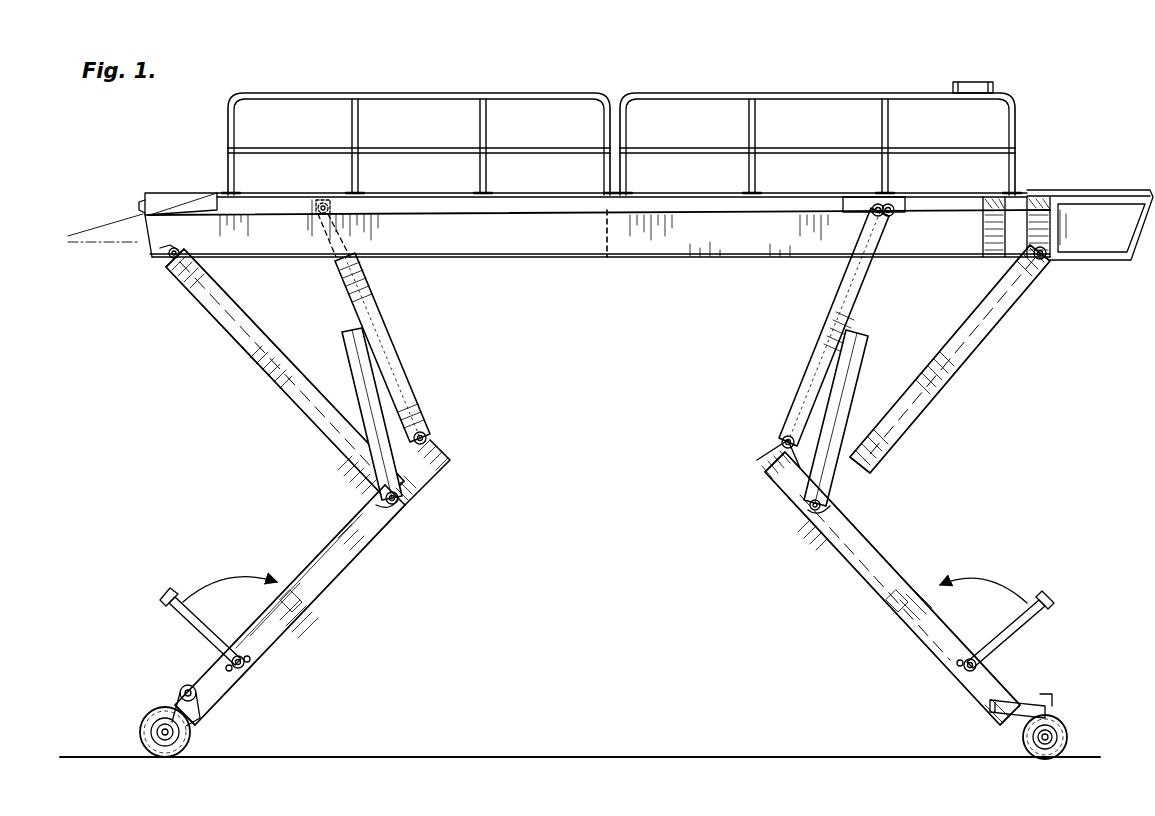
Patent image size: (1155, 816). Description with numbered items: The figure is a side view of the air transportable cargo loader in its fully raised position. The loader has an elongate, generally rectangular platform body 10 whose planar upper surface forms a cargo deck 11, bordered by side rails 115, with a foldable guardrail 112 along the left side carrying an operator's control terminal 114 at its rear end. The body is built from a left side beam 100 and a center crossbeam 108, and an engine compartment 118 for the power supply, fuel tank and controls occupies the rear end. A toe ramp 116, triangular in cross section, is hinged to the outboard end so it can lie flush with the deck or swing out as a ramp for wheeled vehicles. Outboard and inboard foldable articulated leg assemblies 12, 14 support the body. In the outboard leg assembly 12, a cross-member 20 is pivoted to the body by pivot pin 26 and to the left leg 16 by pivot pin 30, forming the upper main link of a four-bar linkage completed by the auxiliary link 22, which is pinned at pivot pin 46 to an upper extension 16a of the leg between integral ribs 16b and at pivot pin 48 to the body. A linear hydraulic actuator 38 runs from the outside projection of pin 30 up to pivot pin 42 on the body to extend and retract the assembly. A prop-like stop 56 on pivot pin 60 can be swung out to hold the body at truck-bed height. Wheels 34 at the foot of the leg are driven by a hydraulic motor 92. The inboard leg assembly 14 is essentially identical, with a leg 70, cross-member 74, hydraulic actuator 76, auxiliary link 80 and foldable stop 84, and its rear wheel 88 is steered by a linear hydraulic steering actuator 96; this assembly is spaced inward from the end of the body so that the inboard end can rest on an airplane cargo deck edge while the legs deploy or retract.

The platform body 10 is at (690, 259).
The cargo deck 11 is at (778, 188).
The outboard leg assembly 12 is at (468, 452).
The inboard leg assembly 14 is at (770, 432).
The left leg 16 is at (355, 560).
The upper extension 16a is at (440, 470).
The integral ribs 16b is at (372, 490).
The cross-member 20 is at (263, 362).
The left auxiliary link 22 is at (398, 356).
The pivot pin 26 is at (170, 256).
The pivot pin 30 is at (397, 502).
The set of wheels 34 is at (150, 720).
The linear hydraulic piston and cylinder actuator 38 is at (348, 340).
The pivot pin 42 is at (318, 203).
The pivot pin 46 is at (420, 432).
The pivot pin 48 is at (328, 200).
The stop 56 is at (173, 606).
The pivot pin 60 is at (243, 668).
The left leg 70 is at (835, 540).
The cross-member 74 is at (985, 335).
The linear hydraulic actuator 76 is at (860, 345).
The left auxiliary link 80 is at (832, 292).
The foldable stop 84 is at (1035, 625).
The rear wheel 88 is at (1068, 738).
The hydraulic motor 92 is at (185, 688).
The linear hydraulic steering actuator 96 is at (1018, 705).
The left side beam 100 is at (492, 240).
The center crossbeam 108 is at (602, 240).
The guardrail 112 is at (805, 93).
The operator's control terminal 114 is at (980, 85).
The side rails 115 is at (653, 193).
The toe ramp 116 is at (156, 190).
The engine compartment 118 is at (1122, 242).